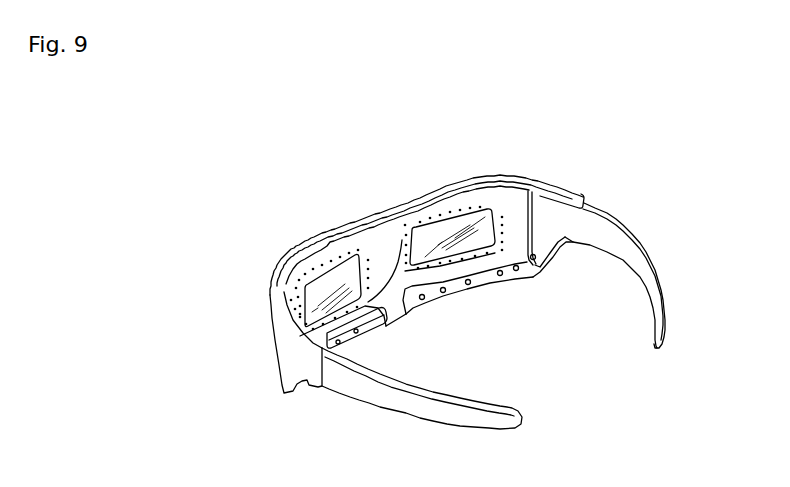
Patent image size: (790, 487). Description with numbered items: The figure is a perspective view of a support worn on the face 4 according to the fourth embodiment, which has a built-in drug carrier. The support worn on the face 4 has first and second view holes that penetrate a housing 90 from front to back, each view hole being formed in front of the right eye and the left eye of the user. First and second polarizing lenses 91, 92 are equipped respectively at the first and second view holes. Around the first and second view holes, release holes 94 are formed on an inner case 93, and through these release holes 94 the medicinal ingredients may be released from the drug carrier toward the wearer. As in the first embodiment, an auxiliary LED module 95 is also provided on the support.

The support worn on the face 4 is at (563, 143).
The housing 90 is at (410, 200).
The first polarizing lens 91 is at (450, 248).
The second polarizing lens 92 is at (393, 315).
The inner case 93 is at (405, 230).
The release holes 94 is at (340, 255).
The auxiliary LED module 95 is at (360, 333).